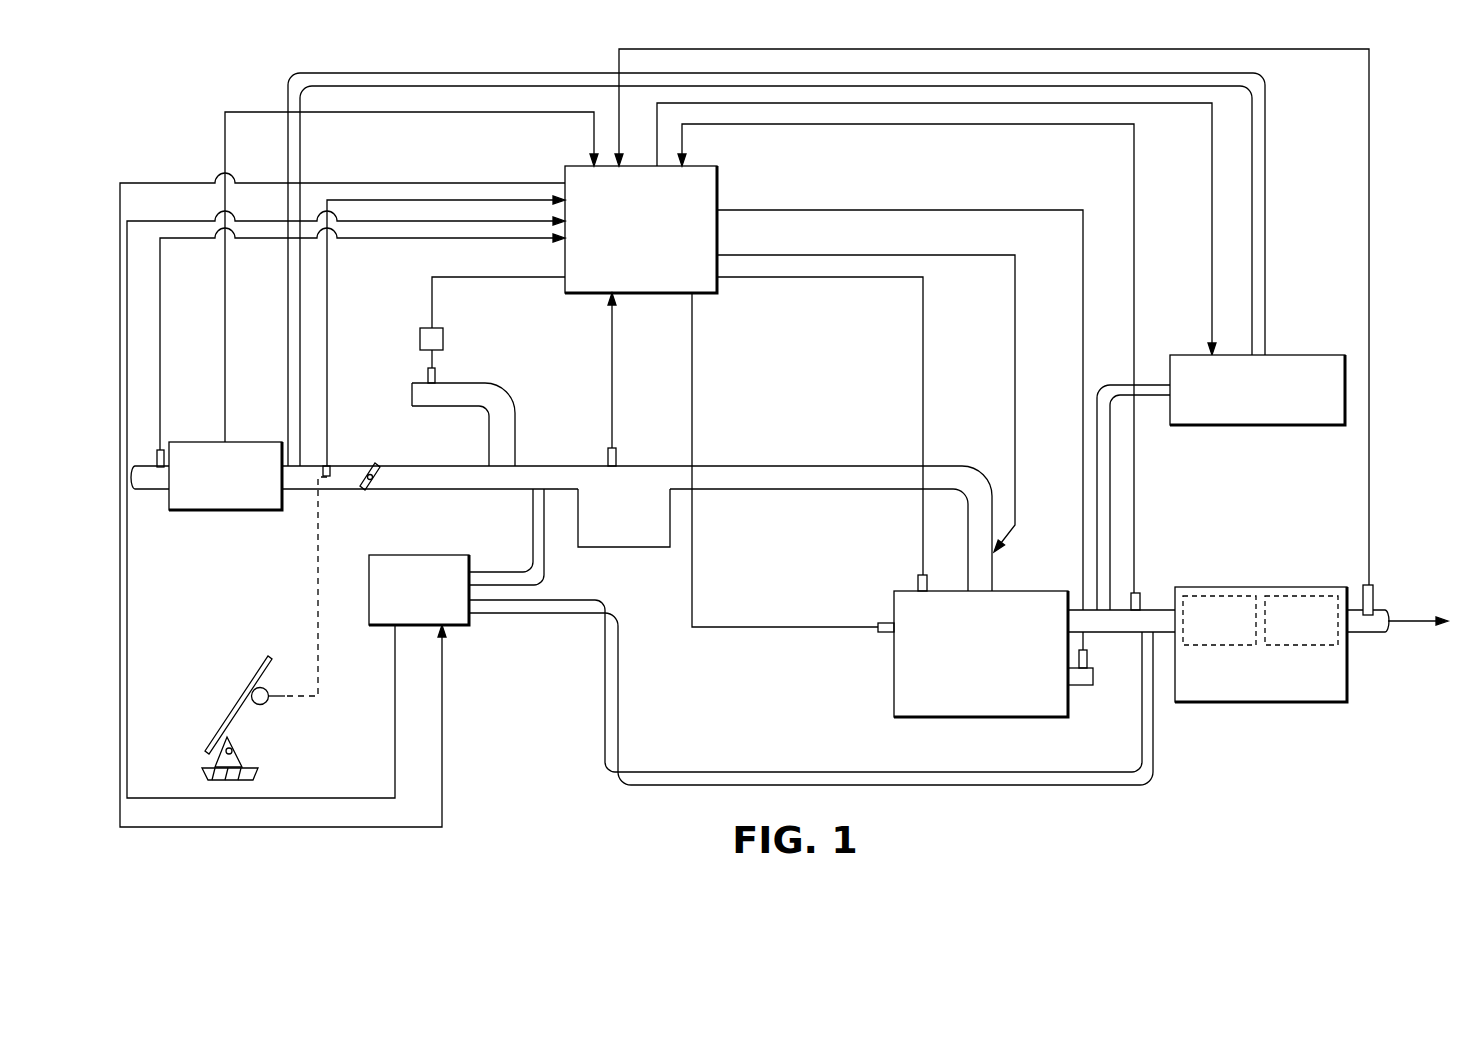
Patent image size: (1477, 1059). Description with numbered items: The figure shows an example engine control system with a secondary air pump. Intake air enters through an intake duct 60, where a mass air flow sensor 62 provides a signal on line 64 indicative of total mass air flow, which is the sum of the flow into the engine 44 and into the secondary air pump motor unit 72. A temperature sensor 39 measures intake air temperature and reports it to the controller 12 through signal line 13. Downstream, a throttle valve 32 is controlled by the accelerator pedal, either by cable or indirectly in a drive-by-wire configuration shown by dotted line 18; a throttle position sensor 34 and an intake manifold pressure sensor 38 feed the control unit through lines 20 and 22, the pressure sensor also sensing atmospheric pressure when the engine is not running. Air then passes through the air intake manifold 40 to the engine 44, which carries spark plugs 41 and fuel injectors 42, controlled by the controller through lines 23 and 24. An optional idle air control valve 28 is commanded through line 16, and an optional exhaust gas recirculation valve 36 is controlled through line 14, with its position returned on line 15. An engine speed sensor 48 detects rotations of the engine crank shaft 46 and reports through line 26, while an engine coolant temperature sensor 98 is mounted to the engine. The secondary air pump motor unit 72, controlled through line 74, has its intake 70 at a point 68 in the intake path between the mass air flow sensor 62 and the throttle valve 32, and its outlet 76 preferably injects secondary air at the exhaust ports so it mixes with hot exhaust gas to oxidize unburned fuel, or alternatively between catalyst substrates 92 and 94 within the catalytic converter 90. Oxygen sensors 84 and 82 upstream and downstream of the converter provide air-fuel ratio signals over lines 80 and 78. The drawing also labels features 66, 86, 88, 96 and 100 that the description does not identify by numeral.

The controller 12 is at (705, 283).
The signal line 13 is at (160, 255).
The control line 14 is at (442, 735).
The EGR valve position line 15 is at (349, 798).
The control line 16 is at (435, 290).
The dotted line 18 is at (318, 592).
The signal line 20 is at (328, 405).
The signal line 22 is at (612, 335).
The control line 23 is at (923, 348).
The control line 24 is at (1015, 368).
The signal line 26 is at (1083, 277).
The idle air control valve 28 is at (430, 336).
The throttle valve 32 is at (372, 485).
The throttle position sensor 34 is at (330, 467).
The exhaust gas recirculation valve 36 is at (455, 620).
The intake manifold pressure sensor 38 is at (607, 455).
The temperature sensor 39 is at (160, 490).
The air intake manifold 40 is at (643, 532).
The spark plugs 41 is at (916, 582).
The fuel injectors 42 is at (1000, 545).
The engine 44 is at (900, 697).
The engine crank shaft 46 is at (1080, 685).
The engine speed sensor 48 is at (1088, 655).
The intake duct 60 is at (152, 466).
The mass air flow sensor 62 is at (193, 455).
The signal line 64 is at (224, 330).
The intake pipe 66 is at (432, 480).
The intake point 68 is at (297, 466).
The intake 70 is at (441, 73).
The secondary air pump motor and control valve unit 72 is at (1332, 355).
The control line 74 is at (1212, 225).
The outlet 76 is at (1103, 395).
The signal line 78 is at (1369, 177).
The signal line 80 is at (1134, 190).
The oxygen sensor 82 is at (1372, 597).
The oxygen sensor 84 is at (1138, 593).
The EGR pipe 86 is at (1040, 783).
The exhaust pipe 88 is at (1166, 633).
The catalytic converter 90 is at (1253, 600).
The catalyst substrate 92 is at (1195, 598).
The catalyst substrate 94 is at (1307, 607).
The exhaust outlet pipe 96 is at (1357, 600).
The engine coolant temperature sensor 98 is at (880, 632).
The engine speed sensor signal line 100 is at (693, 420).